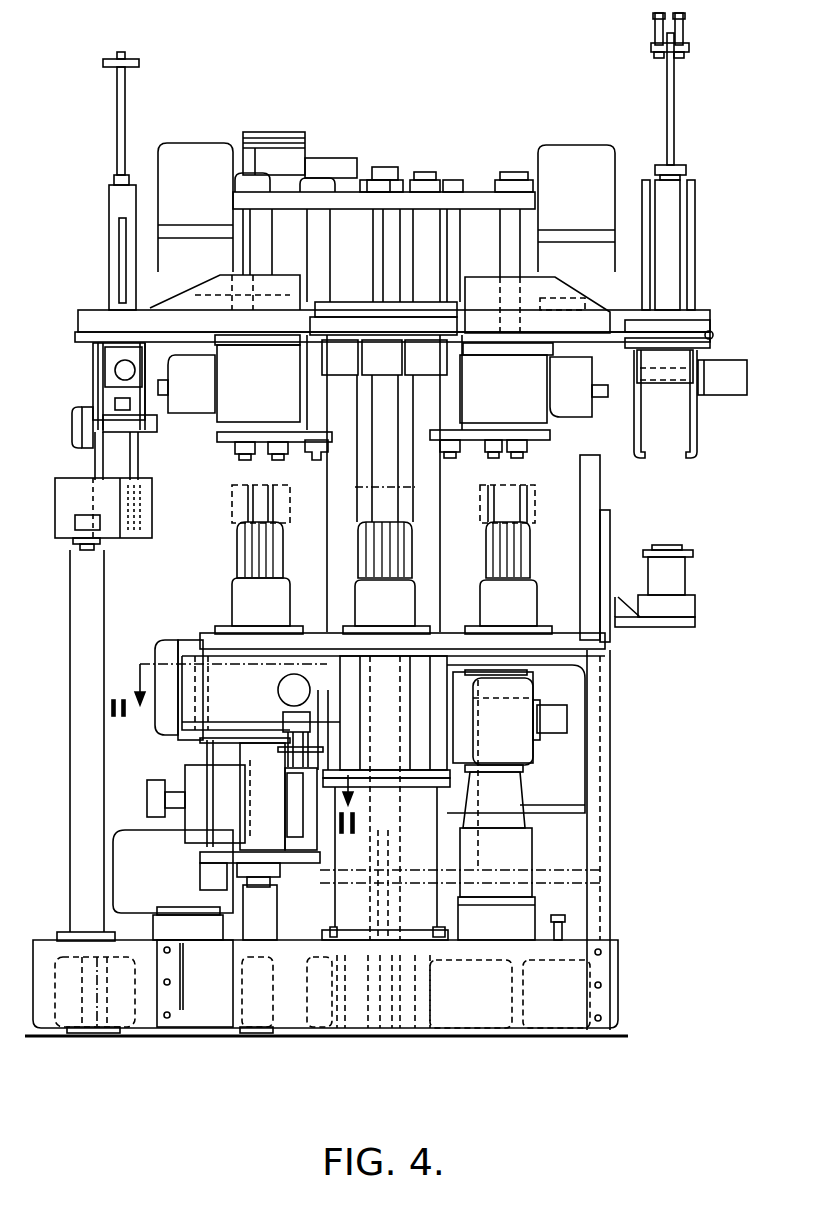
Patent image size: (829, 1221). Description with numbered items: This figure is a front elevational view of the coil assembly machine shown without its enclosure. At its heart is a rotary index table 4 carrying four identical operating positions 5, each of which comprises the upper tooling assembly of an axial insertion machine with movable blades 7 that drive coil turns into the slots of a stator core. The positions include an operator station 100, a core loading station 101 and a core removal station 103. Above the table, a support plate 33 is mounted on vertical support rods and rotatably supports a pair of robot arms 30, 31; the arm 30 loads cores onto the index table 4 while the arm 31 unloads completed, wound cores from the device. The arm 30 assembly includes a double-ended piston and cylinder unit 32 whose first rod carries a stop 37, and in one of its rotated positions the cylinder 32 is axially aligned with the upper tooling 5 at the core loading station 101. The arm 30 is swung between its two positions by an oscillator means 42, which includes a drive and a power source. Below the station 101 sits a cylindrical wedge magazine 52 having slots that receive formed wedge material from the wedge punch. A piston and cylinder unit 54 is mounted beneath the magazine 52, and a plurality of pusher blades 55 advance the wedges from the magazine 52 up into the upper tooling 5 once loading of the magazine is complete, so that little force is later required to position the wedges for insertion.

The stop 37 is at (139, 62).
The piston and cylinder unit 32 is at (122, 203).
The support plate 33 is at (490, 192).
The robot arm 31 is at (626, 308).
The robot arm 30 is at (155, 310).
The oscillator means 42 is at (237, 383).
The operating position 5 is at (227, 569).
The core loading position 101 is at (255, 596).
The blades 7 is at (365, 540).
The operator position 100 is at (400, 605).
The core removal position 103 is at (522, 590).
The rotary index table 4 is at (318, 632).
The wedge magazine 52 is at (160, 722).
The pusher blades 55 is at (240, 815).
The piston and cylinder unit 54 is at (258, 927).